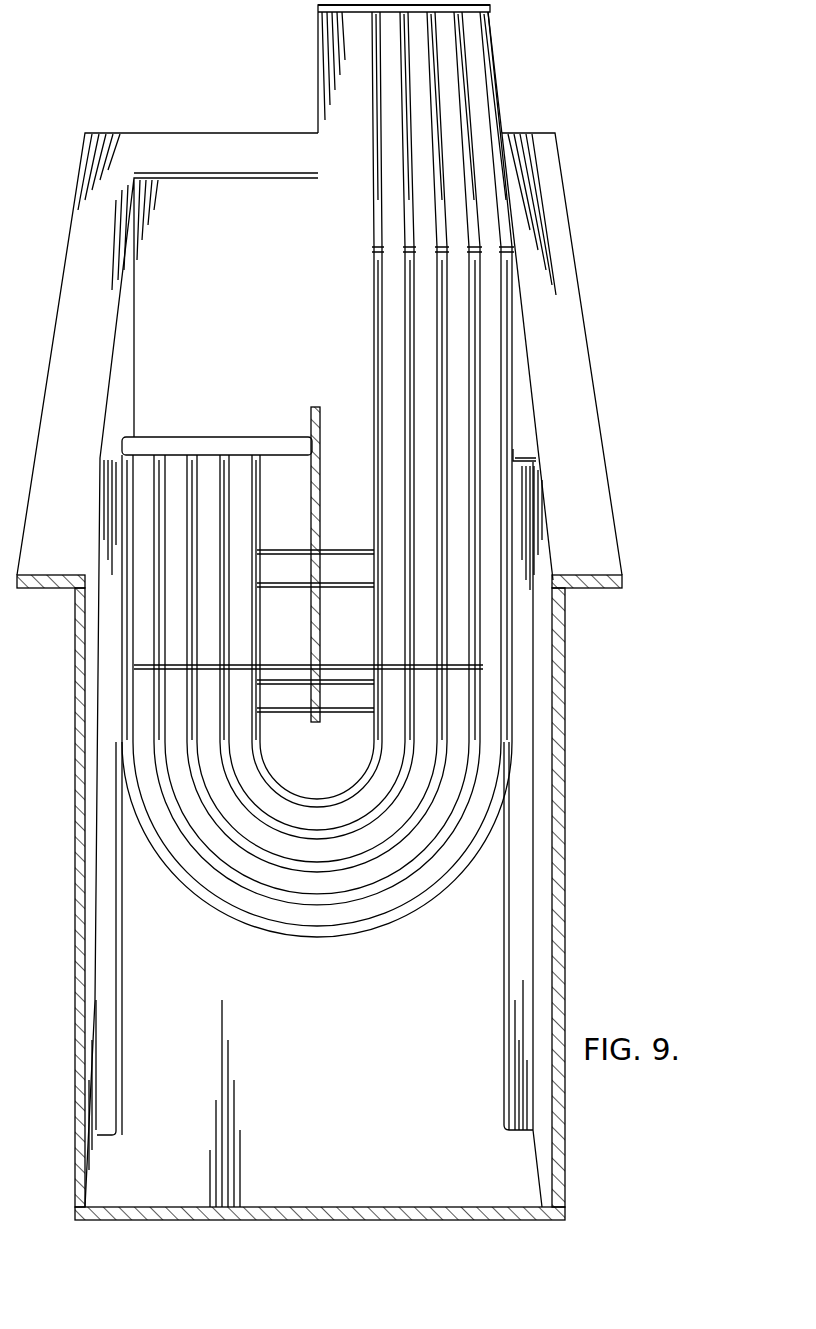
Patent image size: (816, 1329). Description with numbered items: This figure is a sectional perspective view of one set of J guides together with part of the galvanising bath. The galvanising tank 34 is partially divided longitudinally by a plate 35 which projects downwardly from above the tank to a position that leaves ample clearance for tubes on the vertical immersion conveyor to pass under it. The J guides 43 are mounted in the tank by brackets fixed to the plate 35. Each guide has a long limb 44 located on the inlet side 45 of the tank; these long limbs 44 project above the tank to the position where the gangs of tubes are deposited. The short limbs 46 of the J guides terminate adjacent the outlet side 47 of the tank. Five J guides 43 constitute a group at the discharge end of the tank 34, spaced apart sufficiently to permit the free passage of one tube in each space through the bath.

The galvanising tank 34 is at (562, 927).
The plate 35 is at (319, 521).
The J guides 43 is at (344, 936).
The long limbs 44 is at (514, 385).
The inlet side 45 is at (518, 360).
The short limbs 46 is at (123, 628).
The outlet side 47 is at (157, 307).